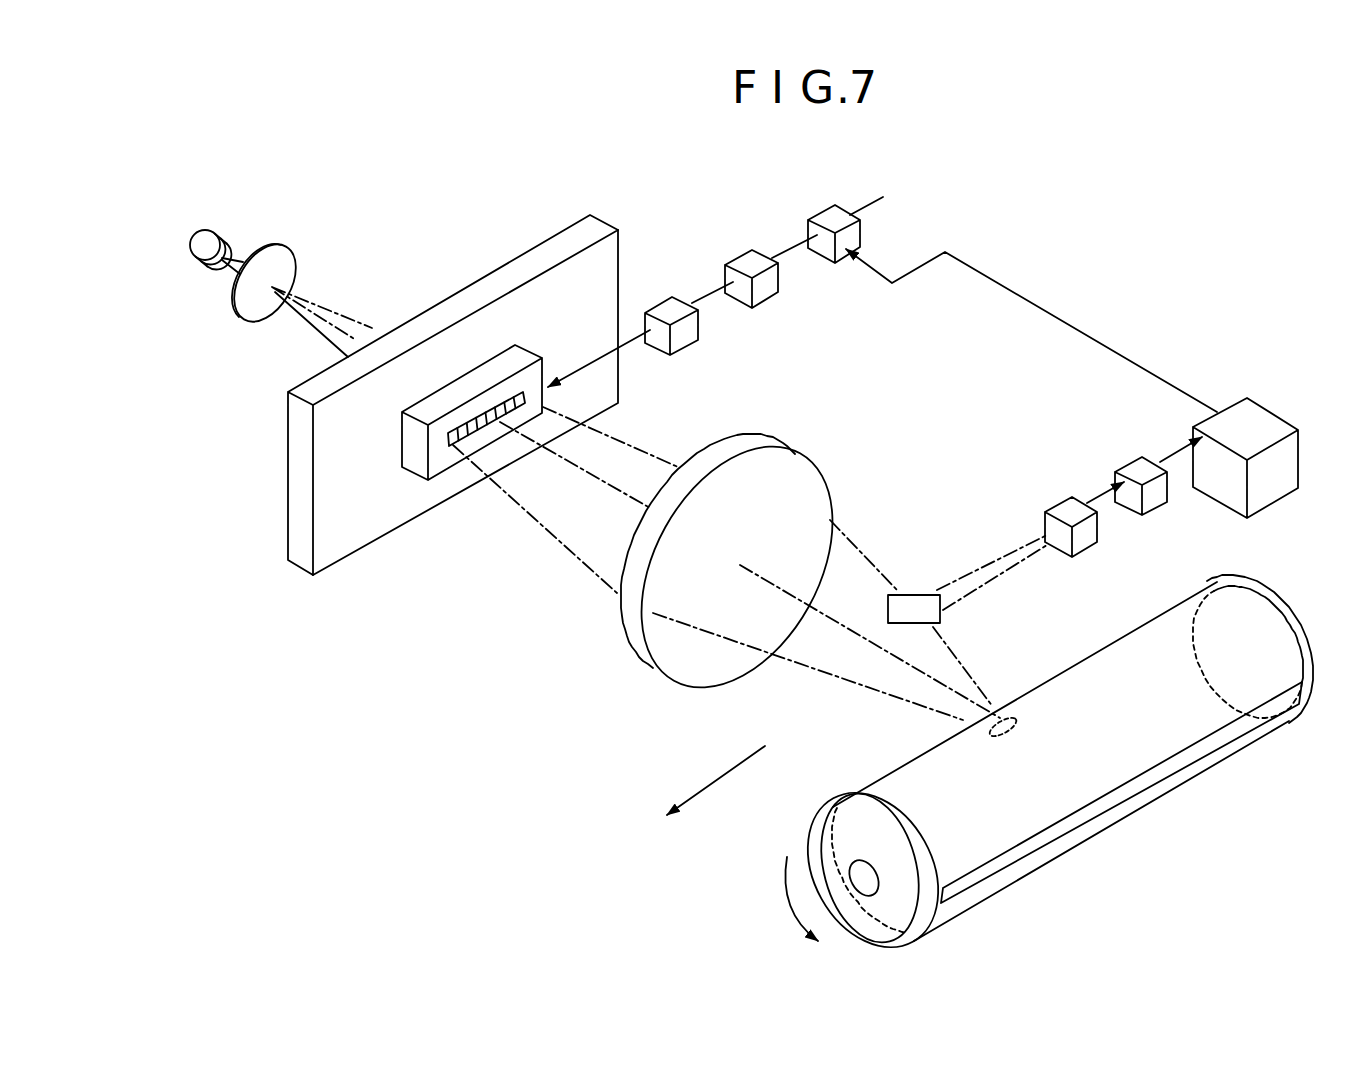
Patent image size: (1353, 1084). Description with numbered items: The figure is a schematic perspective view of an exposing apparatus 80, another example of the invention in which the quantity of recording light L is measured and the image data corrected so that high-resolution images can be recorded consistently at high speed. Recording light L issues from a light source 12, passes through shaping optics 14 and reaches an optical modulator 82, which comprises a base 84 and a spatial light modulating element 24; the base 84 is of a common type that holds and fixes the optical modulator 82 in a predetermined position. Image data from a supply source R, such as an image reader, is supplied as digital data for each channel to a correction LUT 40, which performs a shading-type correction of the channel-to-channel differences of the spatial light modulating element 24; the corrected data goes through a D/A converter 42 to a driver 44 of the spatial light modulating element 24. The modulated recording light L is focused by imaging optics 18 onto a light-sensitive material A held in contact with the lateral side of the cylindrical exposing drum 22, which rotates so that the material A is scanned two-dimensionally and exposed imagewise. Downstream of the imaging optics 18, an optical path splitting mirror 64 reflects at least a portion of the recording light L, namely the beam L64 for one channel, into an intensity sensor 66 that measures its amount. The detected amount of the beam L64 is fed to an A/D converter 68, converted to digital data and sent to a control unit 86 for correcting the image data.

The light source 12 is at (229, 247).
The shaping optics 14 is at (281, 272).
The imaging optics 18 is at (807, 475).
The cylindrical exposing drum 22 is at (852, 800).
The spatial light modulating element 24 is at (485, 378).
The correction LUT 40 is at (826, 218).
The D/A converter 42 is at (748, 265).
The driver 44 is at (667, 307).
The optical path splitting mirror 64 is at (912, 610).
The intensity sensor 66 is at (1074, 558).
The A/D converter 68 is at (1137, 470).
The exposing apparatus 80 is at (485, 760).
The optical modulator 82 is at (366, 570).
The base 84 is at (417, 503).
The control unit 86 is at (1210, 425).
The recording light L is at (583, 565).
The beam for the 64th channel L64 is at (983, 563).
The supply source R is at (877, 198).
The light-sensitive material A is at (1162, 617).